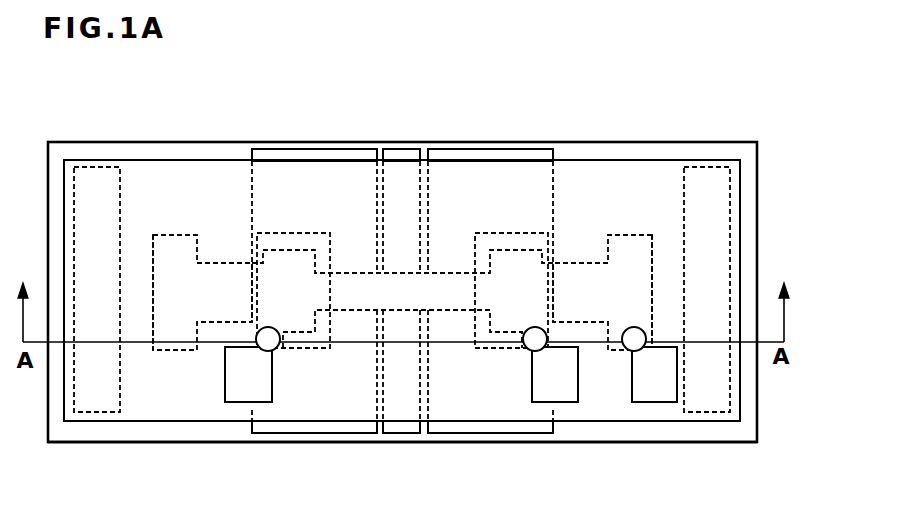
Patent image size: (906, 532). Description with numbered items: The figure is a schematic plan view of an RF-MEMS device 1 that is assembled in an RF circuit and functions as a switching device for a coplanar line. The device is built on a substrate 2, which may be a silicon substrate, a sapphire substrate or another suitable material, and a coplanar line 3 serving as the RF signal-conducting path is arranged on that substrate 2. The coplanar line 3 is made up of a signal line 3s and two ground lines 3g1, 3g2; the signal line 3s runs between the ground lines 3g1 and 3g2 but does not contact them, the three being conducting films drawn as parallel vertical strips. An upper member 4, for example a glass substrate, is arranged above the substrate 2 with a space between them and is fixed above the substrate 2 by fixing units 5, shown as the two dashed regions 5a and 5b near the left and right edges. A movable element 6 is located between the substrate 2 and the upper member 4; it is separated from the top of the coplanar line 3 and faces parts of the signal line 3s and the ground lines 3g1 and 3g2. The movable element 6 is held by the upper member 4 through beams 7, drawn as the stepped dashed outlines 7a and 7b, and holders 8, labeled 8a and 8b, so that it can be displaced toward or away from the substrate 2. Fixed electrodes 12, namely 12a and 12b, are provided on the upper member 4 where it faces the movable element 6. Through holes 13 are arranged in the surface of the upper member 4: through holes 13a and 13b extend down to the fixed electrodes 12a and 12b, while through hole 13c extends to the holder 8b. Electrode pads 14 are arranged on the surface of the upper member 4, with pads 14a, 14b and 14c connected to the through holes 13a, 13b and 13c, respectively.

The RF-MEMS device 1 is at (703, 70).
The substrate 2 is at (743, 428).
The coplanar line 3 is at (287, 86).
The ground line 3g1 is at (310, 153).
The signal line 3s is at (403, 153).
The ground line 3g2 is at (490, 153).
The upper member 4 is at (573, 172).
The fixing units 5 is at (407, 328).
The fixing unit 5a is at (95, 387).
The fixing unit 5b is at (717, 383).
The movable element 6 is at (350, 293).
The beams 7 is at (402, 270).
The beam 7a is at (218, 277).
The beam 7b is at (585, 275).
The holders 8 is at (403, 223).
The holder 8a is at (170, 248).
The holder 8b is at (632, 250).
The fixed electrodes 12 is at (403, 255).
The fixed electrode 12a is at (283, 228).
The fixed electrode 12b is at (483, 222).
The through holes 13 is at (451, 408).
The through hole 13a is at (270, 343).
The through hole 13b is at (532, 345).
The through hole 13c is at (628, 350).
The electrode pads 14 is at (426, 428).
The electrode pad 14a is at (235, 387).
The electrode pad 14b is at (543, 388).
The electrode pad 14c is at (640, 383).